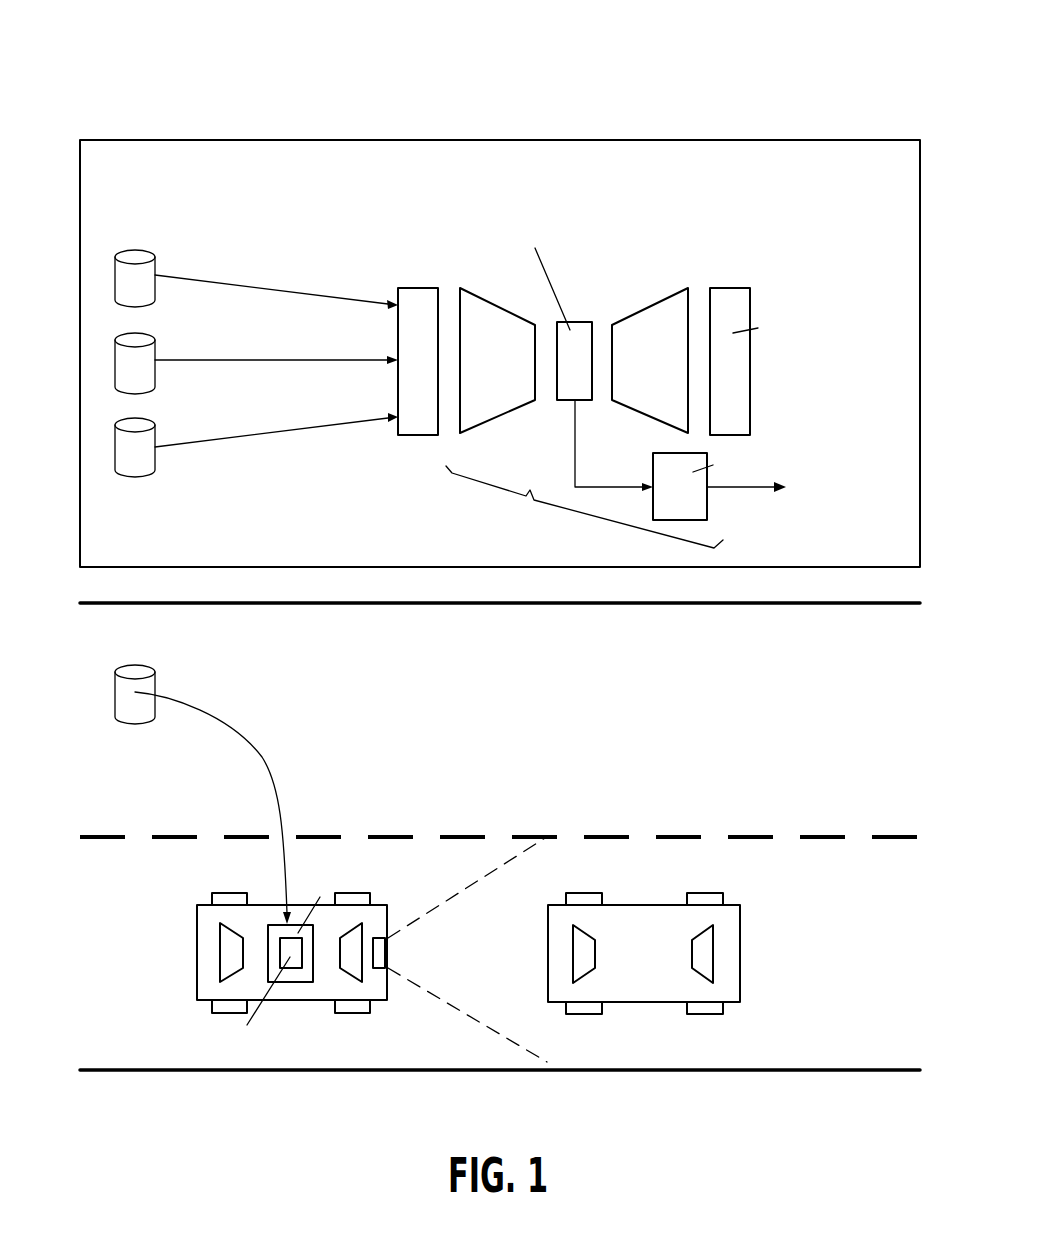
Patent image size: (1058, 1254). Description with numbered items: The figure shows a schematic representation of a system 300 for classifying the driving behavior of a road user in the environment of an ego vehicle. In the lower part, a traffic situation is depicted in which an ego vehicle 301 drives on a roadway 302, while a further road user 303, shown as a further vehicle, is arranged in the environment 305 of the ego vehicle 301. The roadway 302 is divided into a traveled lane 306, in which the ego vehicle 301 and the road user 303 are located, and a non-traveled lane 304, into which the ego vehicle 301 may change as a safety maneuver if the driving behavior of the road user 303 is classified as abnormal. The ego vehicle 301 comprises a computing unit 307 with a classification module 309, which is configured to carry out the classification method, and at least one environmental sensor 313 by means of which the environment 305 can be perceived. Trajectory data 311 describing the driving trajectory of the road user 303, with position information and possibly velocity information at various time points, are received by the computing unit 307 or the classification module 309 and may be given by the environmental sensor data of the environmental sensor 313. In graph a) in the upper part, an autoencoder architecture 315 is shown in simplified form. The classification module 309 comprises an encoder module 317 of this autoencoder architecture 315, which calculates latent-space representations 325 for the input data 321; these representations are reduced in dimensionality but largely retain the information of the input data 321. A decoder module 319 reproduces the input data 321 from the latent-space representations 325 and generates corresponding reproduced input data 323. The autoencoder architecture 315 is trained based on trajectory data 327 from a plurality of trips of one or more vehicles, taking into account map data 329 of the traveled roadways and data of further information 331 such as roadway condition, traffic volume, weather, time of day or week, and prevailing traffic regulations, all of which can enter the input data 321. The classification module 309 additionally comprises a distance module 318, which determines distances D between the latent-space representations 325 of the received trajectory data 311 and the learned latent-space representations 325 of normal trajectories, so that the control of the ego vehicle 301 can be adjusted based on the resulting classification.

The system 300 is at (810, 100).
The ego vehicle 301 is at (197, 955).
The roadway 302 is at (718, 605).
The road user 303 is at (665, 969).
The non-traveled lane 304 is at (907, 737).
The environment 305 is at (468, 955).
The traveled lane 306 is at (907, 969).
The computing unit 307 is at (277, 927).
The classification module 309 is at (300, 913).
The trajectory data 311 is at (155, 680).
The environmental sensor 313 is at (378, 940).
The autoencoder architecture 315 is at (424, 184).
The encoder module 317 is at (500, 303).
The distance module 318 is at (707, 503).
The decoder module 319 is at (648, 303).
The input data 321 is at (420, 288).
The reproduced input data 323 is at (730, 288).
The latent-space representations 325 is at (573, 320).
The trajectory data 327 is at (155, 263).
The map data 329 is at (155, 350).
The information data 331 is at (155, 435).